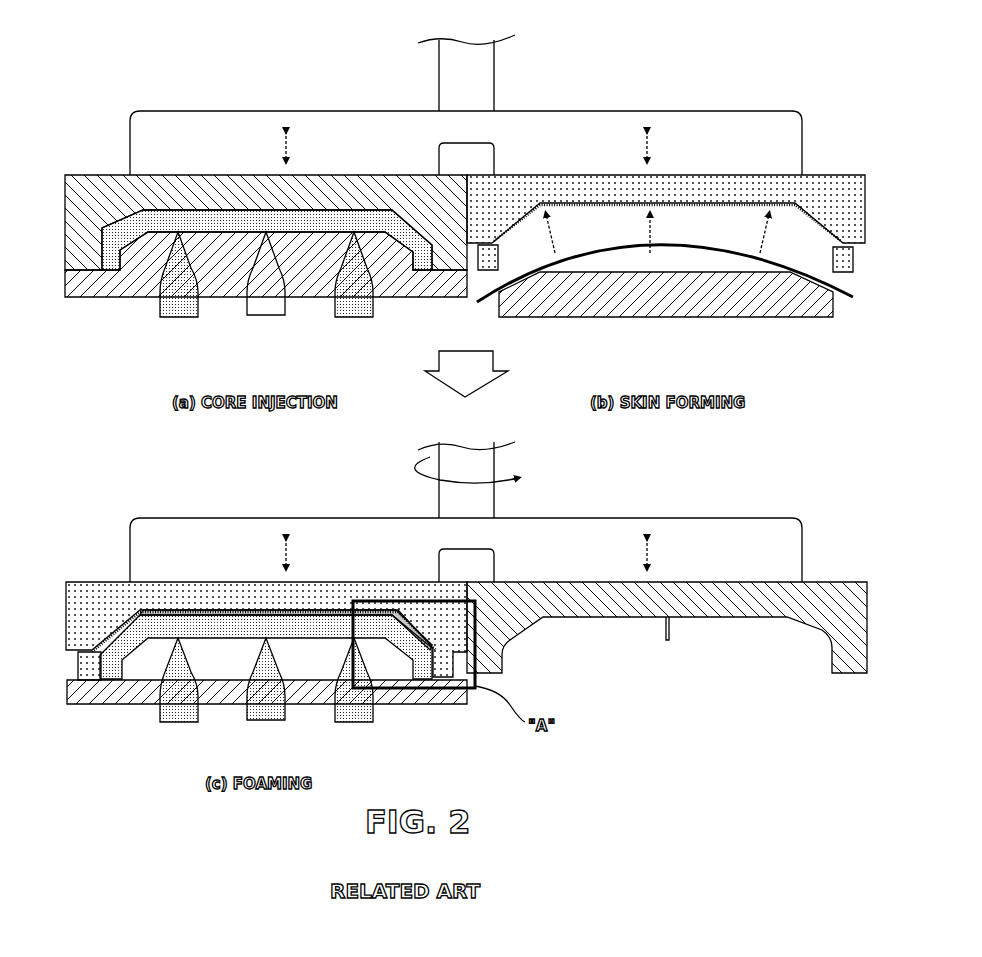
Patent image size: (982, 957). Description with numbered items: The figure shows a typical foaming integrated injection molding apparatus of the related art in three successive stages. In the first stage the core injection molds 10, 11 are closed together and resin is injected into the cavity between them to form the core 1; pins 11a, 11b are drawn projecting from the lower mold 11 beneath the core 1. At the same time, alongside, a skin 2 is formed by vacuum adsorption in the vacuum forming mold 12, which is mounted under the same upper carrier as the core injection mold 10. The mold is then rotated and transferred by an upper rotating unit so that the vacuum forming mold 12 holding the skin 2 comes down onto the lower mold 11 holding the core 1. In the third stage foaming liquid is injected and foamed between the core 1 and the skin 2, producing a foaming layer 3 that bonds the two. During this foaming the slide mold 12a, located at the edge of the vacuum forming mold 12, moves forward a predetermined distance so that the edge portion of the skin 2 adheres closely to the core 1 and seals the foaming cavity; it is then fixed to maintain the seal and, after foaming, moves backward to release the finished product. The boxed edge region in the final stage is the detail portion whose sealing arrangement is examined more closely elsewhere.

The core injection mold 10 is at (100, 190).
The lower mold 11 is at (105, 285).
The ejector/injection pin 11a is at (178, 302).
The pin 11b is at (262, 300).
The core 1 is at (130, 240).
The vacuum forming mold 12 is at (708, 175).
The slide mold 12a is at (85, 682).
The skin 2 is at (727, 250).
The foaming layer 3 is at (178, 608).